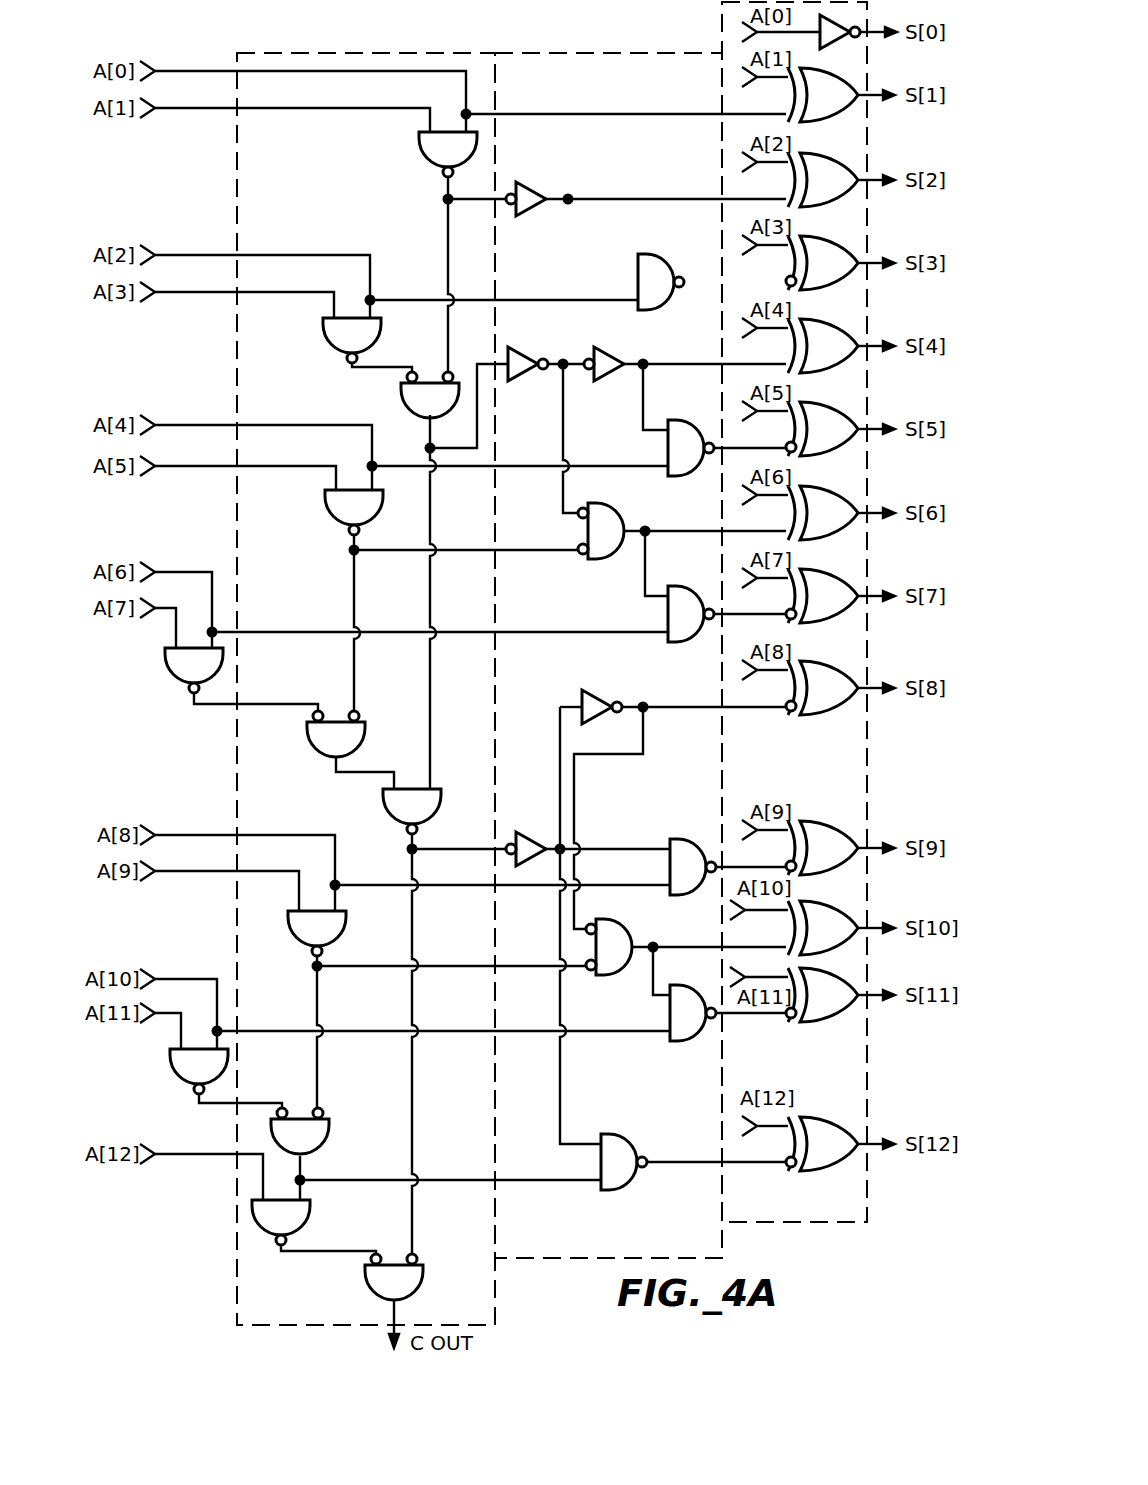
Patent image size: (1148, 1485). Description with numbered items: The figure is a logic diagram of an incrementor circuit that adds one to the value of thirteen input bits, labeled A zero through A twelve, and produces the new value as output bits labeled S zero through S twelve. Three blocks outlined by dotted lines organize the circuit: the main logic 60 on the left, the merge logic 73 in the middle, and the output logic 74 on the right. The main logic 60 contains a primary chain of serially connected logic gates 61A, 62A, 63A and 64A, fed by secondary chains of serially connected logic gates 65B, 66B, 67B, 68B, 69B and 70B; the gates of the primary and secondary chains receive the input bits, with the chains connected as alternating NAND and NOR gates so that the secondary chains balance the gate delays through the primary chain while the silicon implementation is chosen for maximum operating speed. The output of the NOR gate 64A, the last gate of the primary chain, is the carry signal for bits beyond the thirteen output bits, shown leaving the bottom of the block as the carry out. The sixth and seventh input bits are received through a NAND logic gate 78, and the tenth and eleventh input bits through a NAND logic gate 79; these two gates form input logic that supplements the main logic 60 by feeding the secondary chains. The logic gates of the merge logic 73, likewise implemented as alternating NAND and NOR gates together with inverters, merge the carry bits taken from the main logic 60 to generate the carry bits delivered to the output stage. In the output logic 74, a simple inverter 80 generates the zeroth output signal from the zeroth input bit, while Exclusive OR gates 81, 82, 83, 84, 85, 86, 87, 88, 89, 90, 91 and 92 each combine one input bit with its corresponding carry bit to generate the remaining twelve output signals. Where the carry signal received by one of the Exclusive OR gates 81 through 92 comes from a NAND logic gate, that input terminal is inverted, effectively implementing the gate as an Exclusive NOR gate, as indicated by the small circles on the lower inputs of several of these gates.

The main logic 60 is at (281, 1318).
The merge logic 73 is at (556, 1233).
The output logic 74 is at (763, 1209).
The logic gate 61A is at (418, 150).
The logic gate 62A is at (405, 390).
The logic gate 63A is at (397, 801).
The NOR gate 64A is at (410, 1283).
The logic gate 65B is at (325, 335).
The logic gate 66B is at (328, 508).
The logic gate 67B is at (322, 743).
The logic gate 68B is at (328, 927).
The logic gate 69B is at (310, 1134).
The logic gate 70B is at (298, 1208).
The NAND logic gate 78 is at (185, 668).
The NAND logic gate 79 is at (188, 1069).
The inverter 80 is at (838, 46).
The Exclusive OR gate 81 is at (832, 103).
The Exclusive OR gate 82 is at (832, 188).
The Exclusive OR gate 83 is at (832, 273).
The Exclusive OR gate 84 is at (832, 357).
The Exclusive OR gate 85 is at (832, 440).
The Exclusive OR gate 86 is at (832, 522).
The Exclusive OR gate 87 is at (832, 605).
The Exclusive OR gate 88 is at (832, 697).
The Exclusive OR gate 89 is at (832, 858).
The Exclusive OR gate 90 is at (832, 937).
The Exclusive OR gate 91 is at (832, 1004).
The Exclusive OR gate 92 is at (834, 1154).